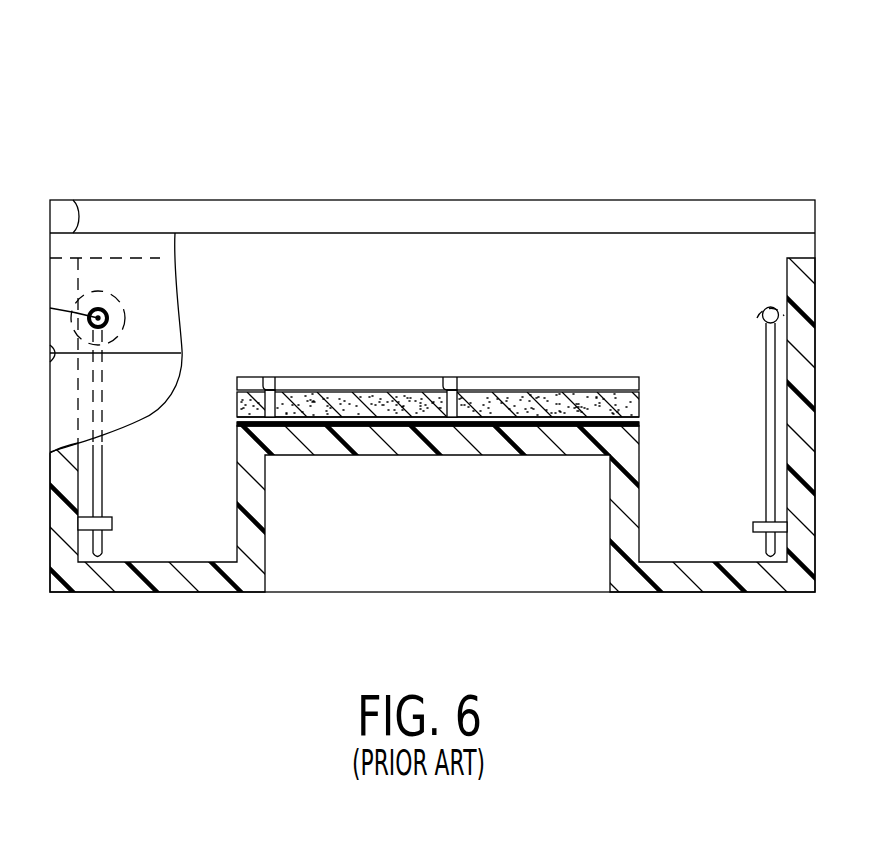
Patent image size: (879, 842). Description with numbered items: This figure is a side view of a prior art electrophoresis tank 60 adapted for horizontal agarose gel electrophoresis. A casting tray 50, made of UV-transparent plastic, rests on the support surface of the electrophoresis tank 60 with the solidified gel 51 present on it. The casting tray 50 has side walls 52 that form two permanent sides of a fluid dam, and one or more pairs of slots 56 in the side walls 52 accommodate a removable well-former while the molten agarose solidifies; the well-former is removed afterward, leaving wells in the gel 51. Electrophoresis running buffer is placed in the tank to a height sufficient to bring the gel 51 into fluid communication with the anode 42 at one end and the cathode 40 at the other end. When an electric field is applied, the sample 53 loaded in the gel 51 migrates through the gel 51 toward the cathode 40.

The electrophoresis tank 60 is at (110, 124).
The anode 42 is at (78, 518).
The cathode 40 is at (757, 317).
The casting tray 50 is at (633, 423).
The gel 51 is at (565, 390).
The side walls 52 is at (364, 376).
The sample 53 is at (262, 384).
The slots 56 is at (267, 398).